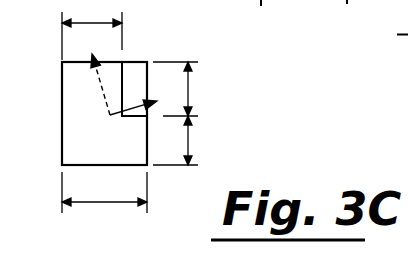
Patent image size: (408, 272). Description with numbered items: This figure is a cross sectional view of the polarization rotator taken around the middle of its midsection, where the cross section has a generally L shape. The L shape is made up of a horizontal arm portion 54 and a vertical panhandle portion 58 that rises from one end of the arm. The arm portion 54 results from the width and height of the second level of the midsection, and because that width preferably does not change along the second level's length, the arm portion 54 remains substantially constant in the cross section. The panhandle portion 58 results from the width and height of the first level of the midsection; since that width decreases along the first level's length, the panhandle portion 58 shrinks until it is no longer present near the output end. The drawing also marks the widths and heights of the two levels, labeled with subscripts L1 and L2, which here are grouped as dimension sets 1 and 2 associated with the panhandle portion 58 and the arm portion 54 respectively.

The arm portion 54 is at (132, 128).
The panhandle portion 58 is at (112, 72).
The L1 dimensions (width wL1, height hL1) 1 is at (146, 58).
The L2 dimensions (width wL2, height hL2) 2 is at (146, 164).